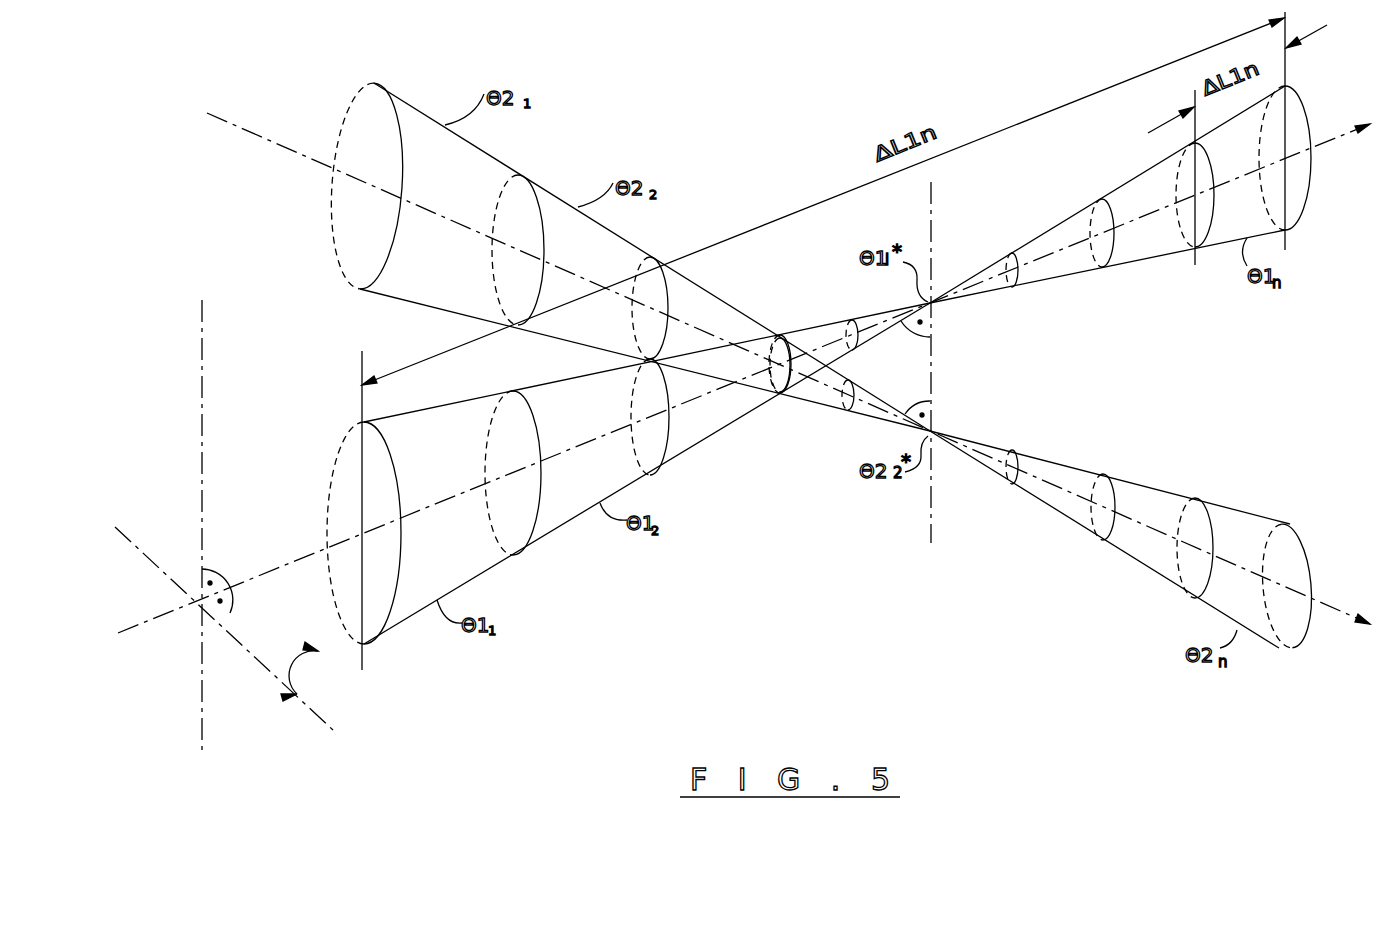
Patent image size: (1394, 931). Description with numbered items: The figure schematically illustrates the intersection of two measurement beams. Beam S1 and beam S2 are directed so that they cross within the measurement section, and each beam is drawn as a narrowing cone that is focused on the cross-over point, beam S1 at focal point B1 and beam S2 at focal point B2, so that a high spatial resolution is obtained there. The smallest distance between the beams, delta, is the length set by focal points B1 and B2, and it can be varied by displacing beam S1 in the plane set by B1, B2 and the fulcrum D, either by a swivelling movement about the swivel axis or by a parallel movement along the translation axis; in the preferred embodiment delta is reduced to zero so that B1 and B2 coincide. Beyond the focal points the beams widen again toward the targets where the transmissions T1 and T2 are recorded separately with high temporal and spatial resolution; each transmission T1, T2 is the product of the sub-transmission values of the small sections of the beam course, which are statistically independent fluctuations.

The beam S1 is at (744, 384).
The beam S2 is at (788, 352).
The focal point B1 is at (931, 297).
The focal point B2 is at (931, 437).
The transmission T1 is at (1137, 194).
The transmission T2 is at (1140, 543).
The fulcrum D is at (201, 606).